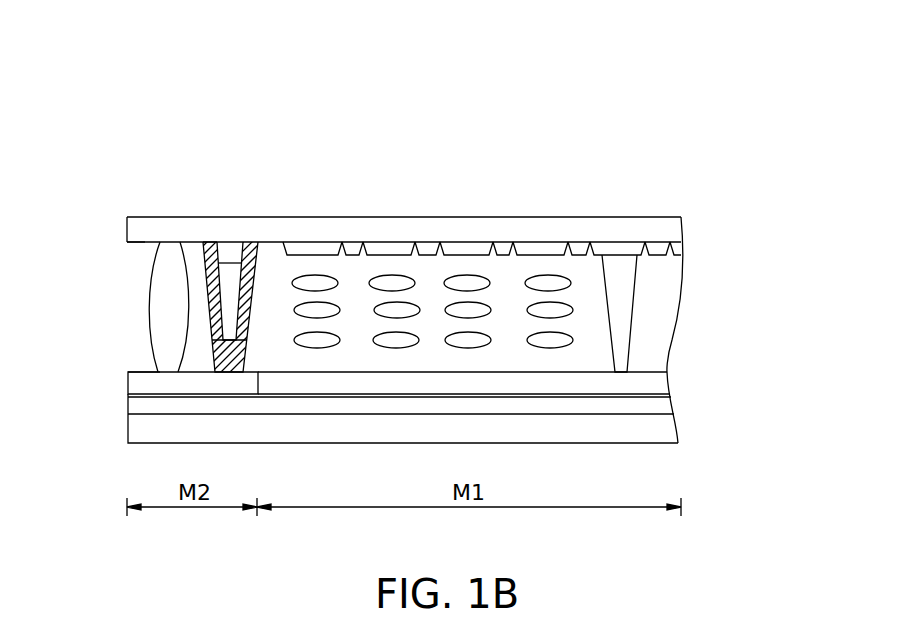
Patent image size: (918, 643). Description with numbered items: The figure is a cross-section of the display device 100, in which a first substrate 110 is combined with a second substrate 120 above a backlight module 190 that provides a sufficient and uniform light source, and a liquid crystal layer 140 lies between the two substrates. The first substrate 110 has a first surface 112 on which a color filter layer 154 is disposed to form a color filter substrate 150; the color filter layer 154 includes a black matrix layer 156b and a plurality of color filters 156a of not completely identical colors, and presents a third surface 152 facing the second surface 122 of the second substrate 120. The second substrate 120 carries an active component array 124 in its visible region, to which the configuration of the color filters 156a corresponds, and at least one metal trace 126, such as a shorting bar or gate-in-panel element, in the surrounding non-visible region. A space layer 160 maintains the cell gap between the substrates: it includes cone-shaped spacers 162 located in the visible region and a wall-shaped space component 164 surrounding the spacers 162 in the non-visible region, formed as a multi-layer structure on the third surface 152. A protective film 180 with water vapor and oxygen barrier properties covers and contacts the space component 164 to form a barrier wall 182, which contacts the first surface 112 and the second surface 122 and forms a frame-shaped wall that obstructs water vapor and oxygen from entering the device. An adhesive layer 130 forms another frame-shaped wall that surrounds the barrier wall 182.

The display device 100 is at (163, 80).
The first substrate 110 is at (667, 230).
The first surface 112 is at (140, 245).
The second substrate 120 is at (137, 405).
The second surface 122 is at (141, 369).
The active component array 124 is at (652, 382).
The metal trace 126 is at (137, 383).
The adhesive layer 130 is at (152, 308).
The liquid crystal layer 140 is at (548, 278).
The color filter substrate 150 is at (770, 206).
The third surface 152 is at (660, 259).
The color filter layer 154 is at (677, 250).
The color filter 156a is at (231, 257).
The black matrix layer 156b is at (357, 255).
The space layer 160 is at (295, 124).
The spacer 162 is at (618, 273).
The space component 164 is at (230, 302).
The protective film 180 is at (203, 242).
The barrier wall 182 is at (252, 356).
The backlight module 190 is at (143, 430).